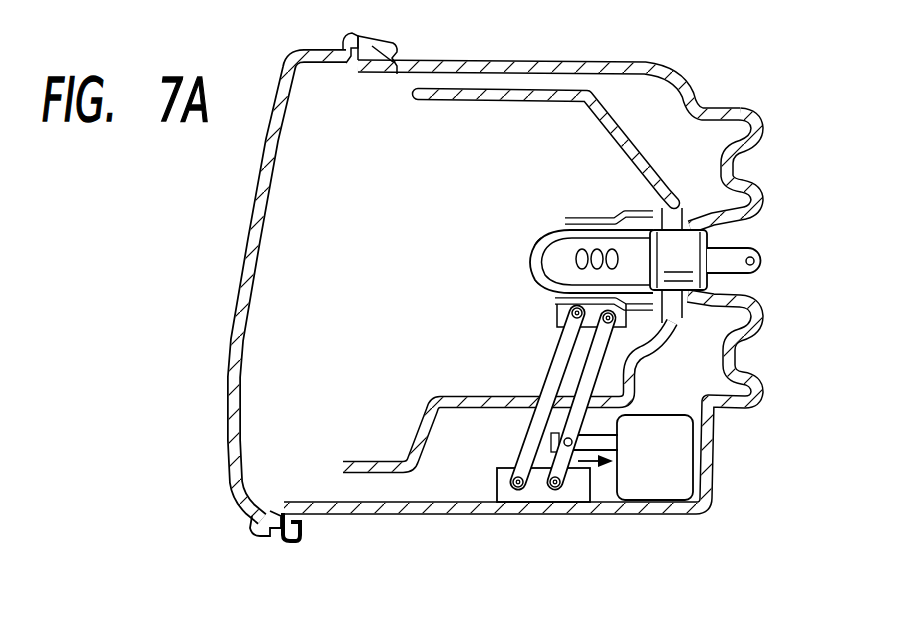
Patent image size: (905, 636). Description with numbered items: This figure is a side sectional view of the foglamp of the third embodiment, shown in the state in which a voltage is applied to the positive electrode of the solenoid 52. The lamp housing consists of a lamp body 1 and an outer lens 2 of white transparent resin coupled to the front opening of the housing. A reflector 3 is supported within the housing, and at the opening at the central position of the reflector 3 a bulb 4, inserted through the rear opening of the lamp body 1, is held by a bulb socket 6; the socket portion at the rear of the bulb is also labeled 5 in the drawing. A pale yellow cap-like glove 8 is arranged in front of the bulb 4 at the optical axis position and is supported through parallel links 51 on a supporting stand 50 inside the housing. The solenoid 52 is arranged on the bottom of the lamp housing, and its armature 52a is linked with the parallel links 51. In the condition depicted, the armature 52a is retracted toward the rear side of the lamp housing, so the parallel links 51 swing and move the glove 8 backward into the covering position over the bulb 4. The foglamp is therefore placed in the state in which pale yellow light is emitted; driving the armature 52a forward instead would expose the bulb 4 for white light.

The lamp body 1 is at (546, 274).
The outer lens 2 is at (237, 267).
The reflector 3 is at (653, 164).
The bulb 4 is at (580, 250).
The bulb socket 5 is at (690, 253).
The bulb socket 6 is at (735, 163).
The glove 8 is at (530, 272).
The supporting stand 50 is at (538, 490).
The parallel links 51 is at (557, 363).
The solenoid 52 is at (645, 487).
The armature 52a is at (607, 442).